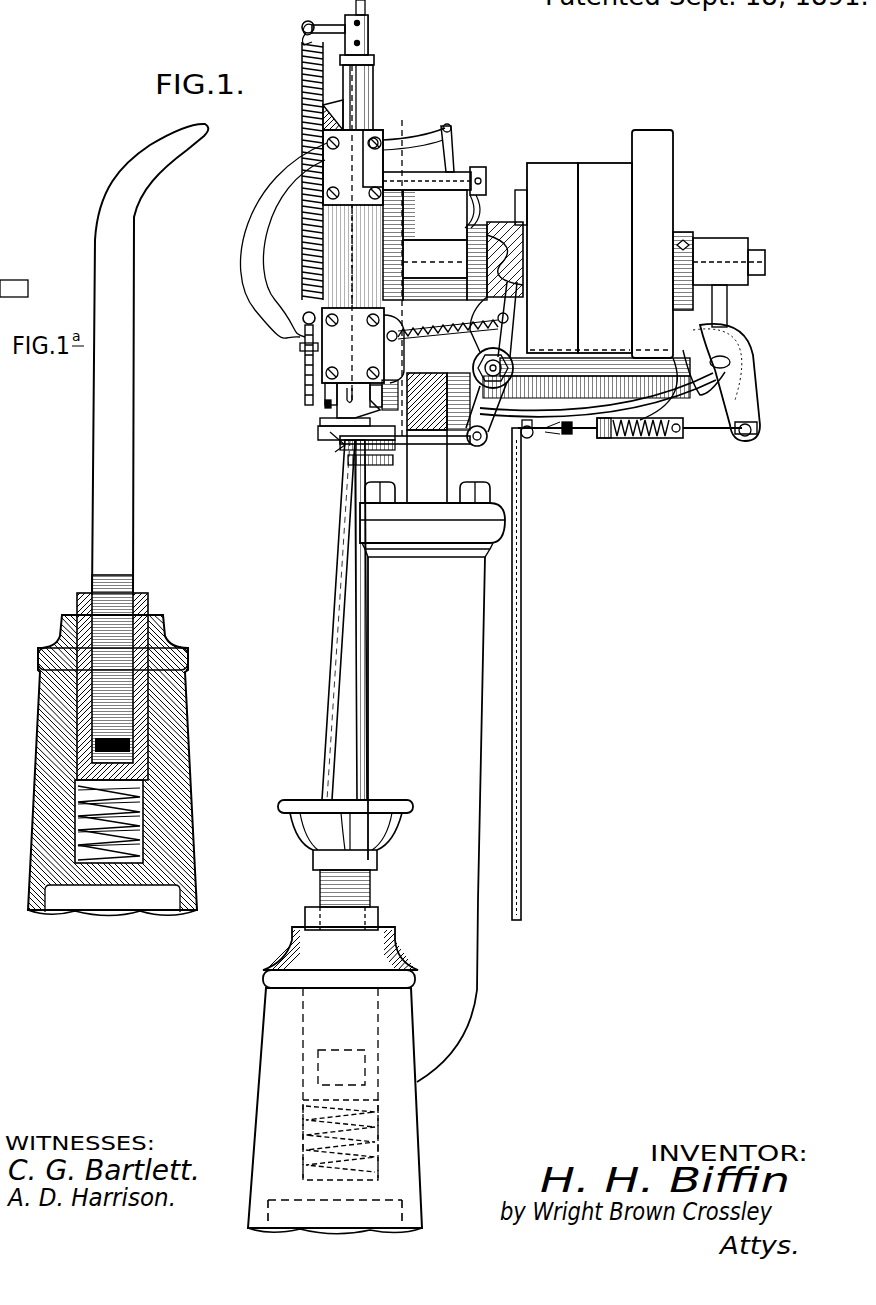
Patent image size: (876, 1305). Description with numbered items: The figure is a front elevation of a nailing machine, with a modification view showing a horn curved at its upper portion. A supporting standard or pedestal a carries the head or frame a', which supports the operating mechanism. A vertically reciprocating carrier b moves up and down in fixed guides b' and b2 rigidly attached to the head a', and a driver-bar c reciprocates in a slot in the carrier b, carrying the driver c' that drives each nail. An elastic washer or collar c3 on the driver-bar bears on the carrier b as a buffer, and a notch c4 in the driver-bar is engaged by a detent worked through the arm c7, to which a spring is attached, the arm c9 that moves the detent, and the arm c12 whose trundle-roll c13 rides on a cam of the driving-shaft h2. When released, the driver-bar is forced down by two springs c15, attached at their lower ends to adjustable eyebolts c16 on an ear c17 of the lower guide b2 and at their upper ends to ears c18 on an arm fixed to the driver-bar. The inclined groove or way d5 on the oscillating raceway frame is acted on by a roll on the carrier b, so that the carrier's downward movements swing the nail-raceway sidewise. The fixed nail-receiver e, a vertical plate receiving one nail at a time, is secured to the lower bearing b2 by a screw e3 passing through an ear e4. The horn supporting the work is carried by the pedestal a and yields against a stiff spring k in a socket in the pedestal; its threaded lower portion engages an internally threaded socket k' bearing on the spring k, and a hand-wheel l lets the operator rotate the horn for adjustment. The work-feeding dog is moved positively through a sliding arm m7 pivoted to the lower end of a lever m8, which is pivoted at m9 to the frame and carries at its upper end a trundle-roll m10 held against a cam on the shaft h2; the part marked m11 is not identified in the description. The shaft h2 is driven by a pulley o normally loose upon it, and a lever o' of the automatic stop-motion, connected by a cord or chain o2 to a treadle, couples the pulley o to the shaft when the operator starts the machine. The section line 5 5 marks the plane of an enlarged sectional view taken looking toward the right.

In FIG. 1A, the supporting standard or pedestal a is at (126, 745).
In FIG. 1, the supporting standard or pedestal a is at (349, 1080).
In FIG. 1, the head or frame a' is at (432, 756).
In FIG. 1, the vertically-reciprocating carrier b is at (373, 65).
In FIG. 1, the fixed guide b' is at (320, 219).
In FIG. 1, the lower fixed guide b2 is at (330, 355).
In FIG. 1, the driver-bar c is at (369, 232).
In FIG. 1, the driver c' is at (375, 398).
In FIG. 1, the washer or collar c3 is at (457, 180).
In FIG. 1, the notch or recess c4 is at (478, 288).
In FIG. 1, the arm c7 is at (452, 145).
In FIG. 1, the arm c9 is at (366, 158).
In FIG. 1, the arm c12 is at (473, 195).
In FIG. 1, the trundle-roll c13 is at (475, 230).
In FIG. 1, the springs c15 is at (303, 65).
In FIG. 1, the adjustable eyebolts c16 is at (300, 320).
In FIG. 1, the ear c17 is at (250, 353).
In FIG. 1, the ears c18 is at (306, 28).
In FIG. 1, the inclined groove or way d5 is at (322, 118).
In FIG. 1, the fixed nail-receiver e is at (345, 413).
In FIG. 1, the screw or bolt e3 is at (325, 407).
In FIG. 1, the ear e4 is at (322, 395).
In FIG. 1, the driving-shaft h2 is at (766, 262).
In FIG. 1A, the spring k is at (152, 821).
In FIG. 1, the spring k is at (402, 1139).
In FIG. 1, the internally-threaded socket k' is at (360, 909).
In FIG. 1, the hand-wheel l is at (385, 806).
In FIG. 1, the sliding arm m7 is at (440, 452).
In FIG. 1, the lever m8 is at (486, 420).
In FIG. 1, the pivot m9 is at (500, 355).
In FIG. 1, the trundle-roll m10 is at (512, 258).
In FIG. 1, the small coil spring m11 is at (445, 330).
In FIG. 1, the pulley o is at (613, 244).
In FIG. 1, the lever o' is at (735, 382).
In FIG. 1, the cord or chain o2 is at (520, 576).
In FIG. 1, the section line 5 is at (423, 88).